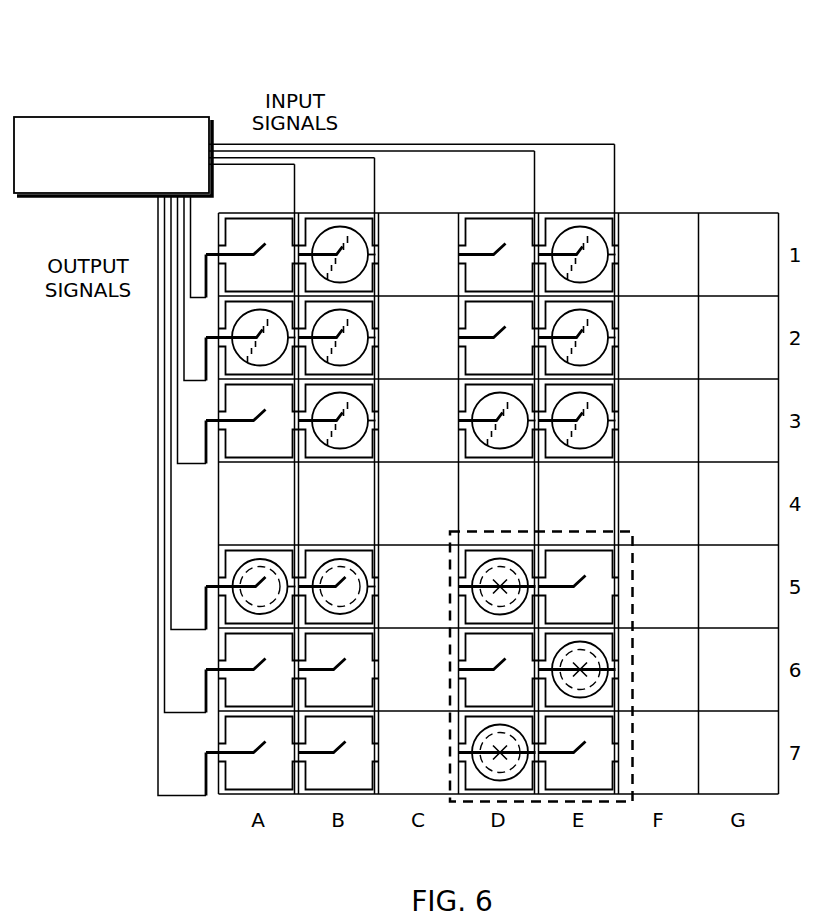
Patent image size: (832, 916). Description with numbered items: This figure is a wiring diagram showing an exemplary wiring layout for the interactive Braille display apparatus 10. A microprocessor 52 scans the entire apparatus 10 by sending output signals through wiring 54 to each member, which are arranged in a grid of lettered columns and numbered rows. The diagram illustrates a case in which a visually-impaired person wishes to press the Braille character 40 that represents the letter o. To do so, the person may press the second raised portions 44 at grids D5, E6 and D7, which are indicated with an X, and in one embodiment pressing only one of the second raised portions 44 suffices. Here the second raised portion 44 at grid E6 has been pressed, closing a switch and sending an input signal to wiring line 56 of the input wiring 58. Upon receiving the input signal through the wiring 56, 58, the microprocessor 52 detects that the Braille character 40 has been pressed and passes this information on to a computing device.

The apparatus 10 is at (672, 67).
The Braille character 40 is at (530, 803).
The second raised portion 44 is at (499, 572).
The microprocessor 52 is at (111, 117).
The wiring 54 is at (158, 452).
The wiring line 56 is at (614, 178).
The input wiring 58 is at (452, 144).